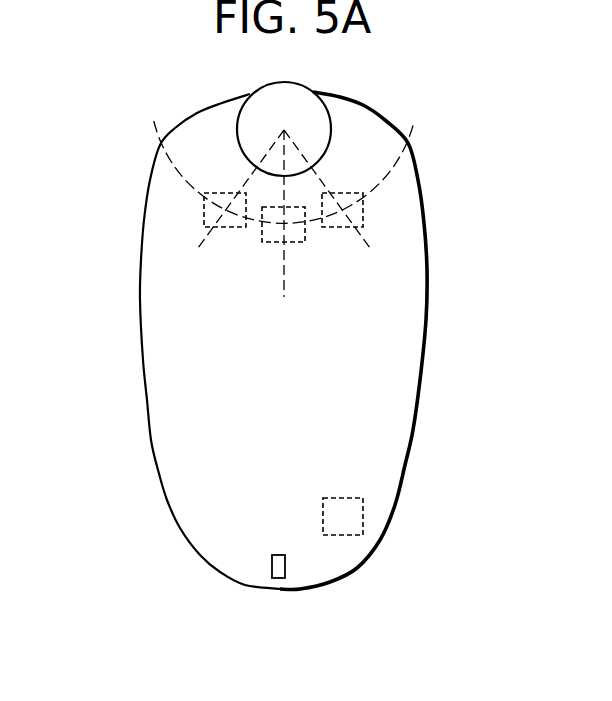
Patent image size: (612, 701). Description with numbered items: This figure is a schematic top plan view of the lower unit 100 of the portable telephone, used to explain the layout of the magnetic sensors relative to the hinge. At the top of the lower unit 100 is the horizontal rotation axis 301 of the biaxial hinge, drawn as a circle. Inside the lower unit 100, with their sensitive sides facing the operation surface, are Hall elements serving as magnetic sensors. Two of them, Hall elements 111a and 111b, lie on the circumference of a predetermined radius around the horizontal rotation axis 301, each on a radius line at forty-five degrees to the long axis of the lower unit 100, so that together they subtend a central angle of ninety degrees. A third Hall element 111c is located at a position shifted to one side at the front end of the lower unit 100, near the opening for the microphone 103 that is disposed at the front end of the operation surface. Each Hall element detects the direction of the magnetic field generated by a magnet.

The lower unit 100 is at (147, 445).
The horizontal rotation axis 301 is at (308, 91).
The Hall element 111a is at (363, 213).
The Hall element 111b is at (205, 208).
The Hall element 111c is at (363, 521).
The microphone 103 is at (270, 566).